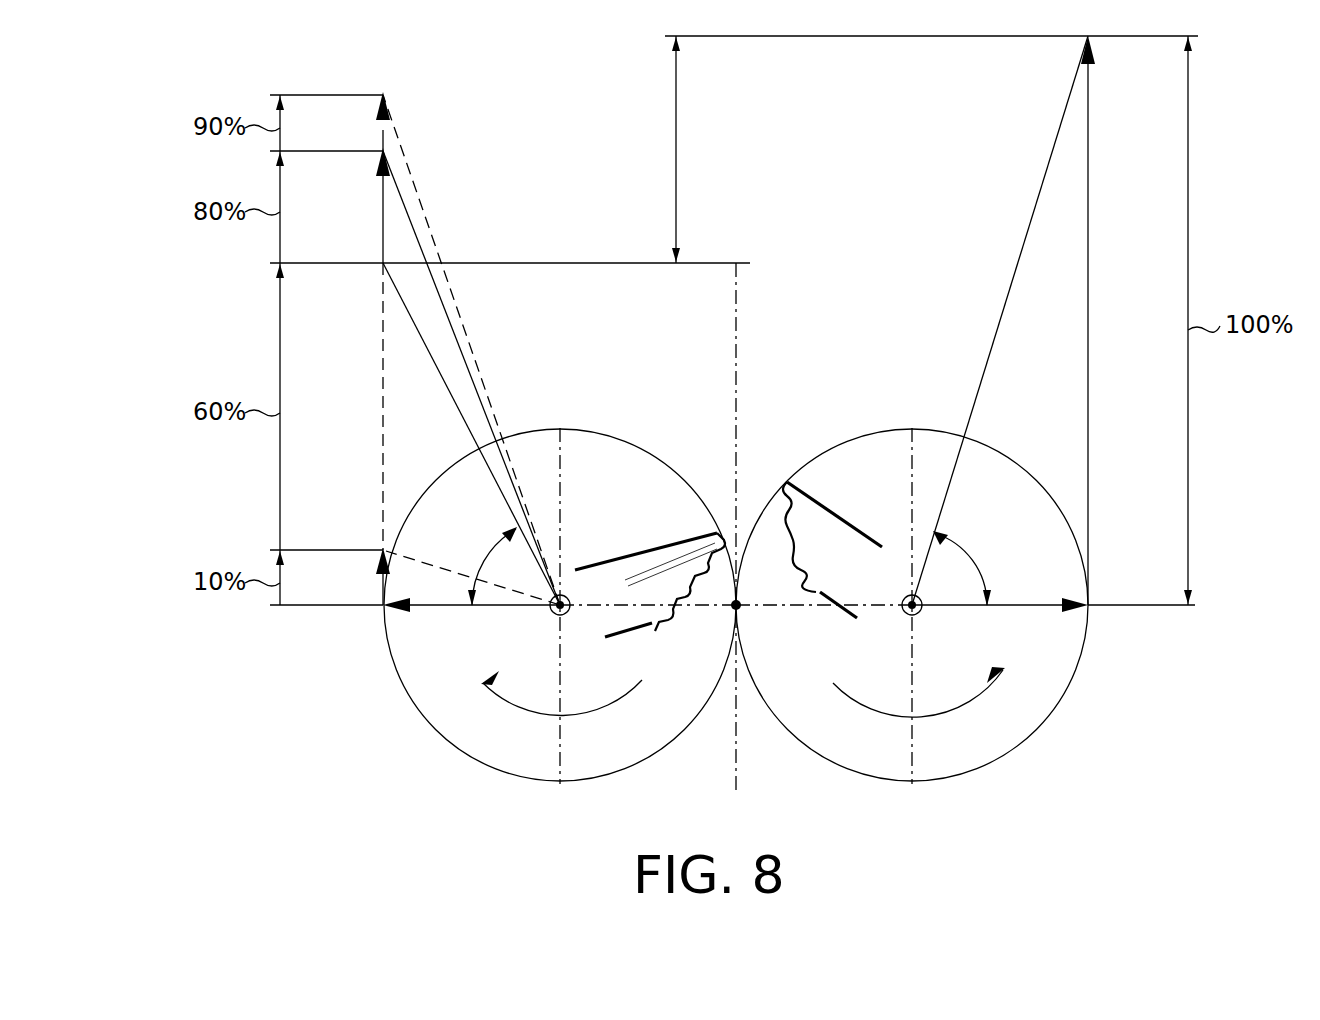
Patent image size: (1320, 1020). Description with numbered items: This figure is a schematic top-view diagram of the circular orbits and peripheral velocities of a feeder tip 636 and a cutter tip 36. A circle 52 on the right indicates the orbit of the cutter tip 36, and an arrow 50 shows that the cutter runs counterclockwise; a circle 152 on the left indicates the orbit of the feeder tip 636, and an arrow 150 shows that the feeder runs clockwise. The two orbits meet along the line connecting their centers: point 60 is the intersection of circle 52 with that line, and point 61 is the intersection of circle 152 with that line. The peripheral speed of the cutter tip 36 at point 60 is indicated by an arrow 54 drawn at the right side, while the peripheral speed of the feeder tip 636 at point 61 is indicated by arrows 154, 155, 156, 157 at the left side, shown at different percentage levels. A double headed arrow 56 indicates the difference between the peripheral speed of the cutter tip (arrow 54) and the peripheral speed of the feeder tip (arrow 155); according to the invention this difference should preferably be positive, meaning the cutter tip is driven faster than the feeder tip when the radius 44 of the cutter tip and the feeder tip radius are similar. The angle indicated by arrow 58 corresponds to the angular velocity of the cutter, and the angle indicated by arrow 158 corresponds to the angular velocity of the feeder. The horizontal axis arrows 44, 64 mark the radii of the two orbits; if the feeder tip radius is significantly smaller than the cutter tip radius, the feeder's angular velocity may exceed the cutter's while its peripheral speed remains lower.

The cutter tip 36 is at (832, 525).
The cutter tip radius 44 is at (1038, 607).
The arrow indicating direction of rotation of the cutter 50 is at (937, 715).
The circle 52 is at (1062, 703).
The arrow indicating peripheral speed of the cutter tip 54 is at (1088, 320).
The double headed arrow 56 is at (676, 150).
The arrow indicating angle 58 is at (970, 557).
The point 60 is at (794, 630).
The point 61 is at (741, 611).
The y-axis direction arrow 64 is at (447, 608).
The arrow indicating direction of rotation of the feeder 150 is at (585, 715).
The circle 152 is at (410, 703).
The arrow indicating peripheral speed of the feeder tip 154 is at (383, 583).
The arrow indicating peripheral speed of the feeder tip 155 is at (383, 413).
The arrow indicating peripheral speed of the feeder tip 156 is at (383, 212).
The arrow indicating peripheral speed of the feeder tip 157 is at (383, 128).
The arrow indicating angle 158 is at (498, 546).
The feeder tip 636 is at (657, 552).